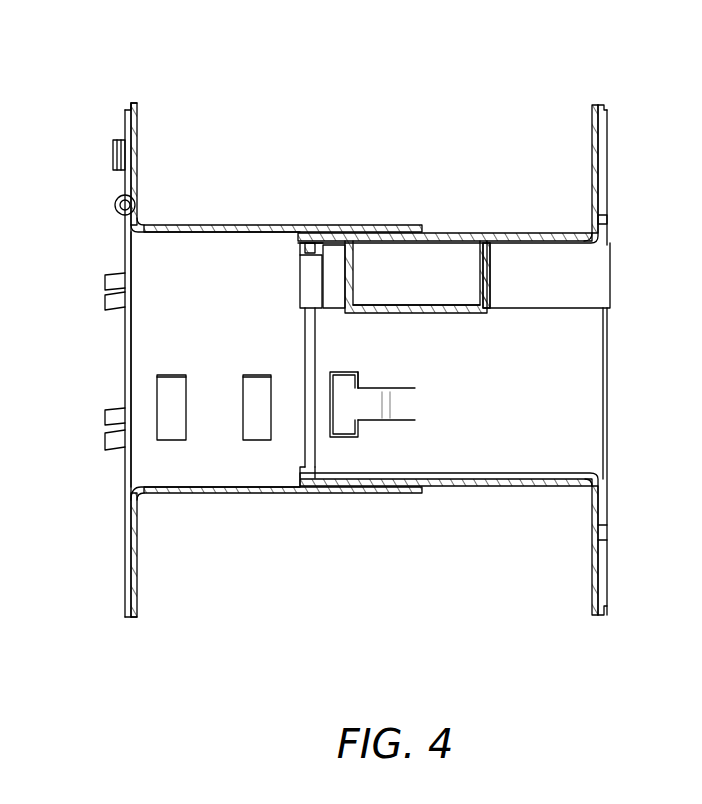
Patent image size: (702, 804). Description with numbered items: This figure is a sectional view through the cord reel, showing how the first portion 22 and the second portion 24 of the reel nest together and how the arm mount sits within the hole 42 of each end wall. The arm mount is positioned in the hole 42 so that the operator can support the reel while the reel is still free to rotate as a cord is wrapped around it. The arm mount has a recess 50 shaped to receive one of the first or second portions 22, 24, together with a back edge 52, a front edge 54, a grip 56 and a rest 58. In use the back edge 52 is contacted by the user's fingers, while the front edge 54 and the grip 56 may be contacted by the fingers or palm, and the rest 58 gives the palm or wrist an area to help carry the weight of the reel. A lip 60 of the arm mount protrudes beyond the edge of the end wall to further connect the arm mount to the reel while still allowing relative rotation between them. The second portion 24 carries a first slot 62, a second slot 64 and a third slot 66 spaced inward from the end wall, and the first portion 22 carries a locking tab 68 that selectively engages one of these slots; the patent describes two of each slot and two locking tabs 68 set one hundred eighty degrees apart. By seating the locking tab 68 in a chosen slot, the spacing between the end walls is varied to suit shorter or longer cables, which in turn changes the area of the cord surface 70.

The first portion 22 is at (567, 226).
The second portion 24 is at (172, 220).
The hole 42 is at (172, 230).
The recess 50 is at (312, 242).
The back edge 52 is at (352, 282).
The front edge 54 is at (490, 281).
The grip 56 is at (462, 316).
The rest 58 is at (520, 247).
The lip 60 is at (607, 220).
The first slot 62 is at (182, 440).
The second slot 64 is at (270, 374).
The third slot 66 is at (338, 437).
The locking tab 68 is at (342, 384).
The cord surface 70 is at (582, 500).